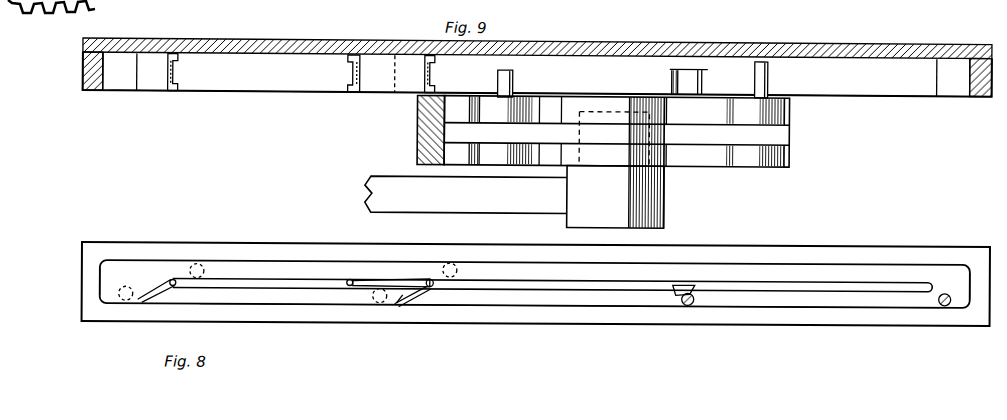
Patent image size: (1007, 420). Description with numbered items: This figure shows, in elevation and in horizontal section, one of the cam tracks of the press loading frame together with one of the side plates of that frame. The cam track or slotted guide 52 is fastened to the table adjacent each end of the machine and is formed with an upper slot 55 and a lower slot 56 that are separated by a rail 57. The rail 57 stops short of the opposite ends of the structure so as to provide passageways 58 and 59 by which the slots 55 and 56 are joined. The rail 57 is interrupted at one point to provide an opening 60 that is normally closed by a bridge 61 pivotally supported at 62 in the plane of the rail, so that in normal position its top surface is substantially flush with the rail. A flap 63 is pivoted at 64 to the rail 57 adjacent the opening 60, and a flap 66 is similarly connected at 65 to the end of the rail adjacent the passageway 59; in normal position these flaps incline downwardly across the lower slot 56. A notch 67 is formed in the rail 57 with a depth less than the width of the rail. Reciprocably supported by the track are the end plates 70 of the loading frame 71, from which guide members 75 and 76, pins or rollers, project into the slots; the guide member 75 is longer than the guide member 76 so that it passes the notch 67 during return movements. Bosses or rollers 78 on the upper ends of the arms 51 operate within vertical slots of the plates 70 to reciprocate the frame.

In FIG. 9, the arms 51 is at (466, 194).
In FIG. 9, the cam track 52 is at (308, 38).
In FIG. 8, the cam track 52 is at (287, 242).
In FIG. 8, the upper slot 55 is at (512, 272).
In FIG. 8, the lower slot 56 is at (618, 298).
In FIG. 9, the rail 57 is at (624, 56).
In FIG. 8, the rail 57 is at (547, 290).
In FIG. 9, the passageway 58 is at (960, 80).
In FIG. 8, the passageway 58 is at (962, 272).
In FIG. 9, the passageway 59 is at (106, 72).
In FIG. 8, the passageway 59 is at (106, 282).
In FIG. 8, the opening 60 is at (398, 300).
In FIG. 9, the bridge 61 is at (384, 86).
In FIG. 8, the bridge 61 is at (404, 276).
In FIG. 9, the pivot 62 is at (346, 73).
In FIG. 8, the pivot 62 is at (352, 278).
In FIG. 8, the flap 63 is at (418, 296).
In FIG. 9, the pivot 64 is at (437, 72).
In FIG. 8, the pivot 64 is at (433, 284).
In FIG. 9, the pivotal connection 65 is at (180, 73).
In FIG. 8, the pivotal connection 65 is at (176, 272).
In FIG. 9, the flap 66 is at (155, 88).
In FIG. 8, the flap 66 is at (158, 290).
In FIG. 9, the notch 67 is at (686, 80).
In FIG. 8, the notch 67 is at (690, 282).
In FIG. 9, the end plates 70 is at (690, 150).
In FIG. 9, the loading frame 71 is at (408, 154).
In FIG. 9, the guide member 75 is at (770, 72).
In FIG. 8, the guide member 75 is at (946, 301).
In FIG. 9, the guide member 76 is at (514, 73).
In FIG. 8, the guide member 76 is at (691, 302).
In FIG. 9, the bosses or rollers 78 is at (586, 160).